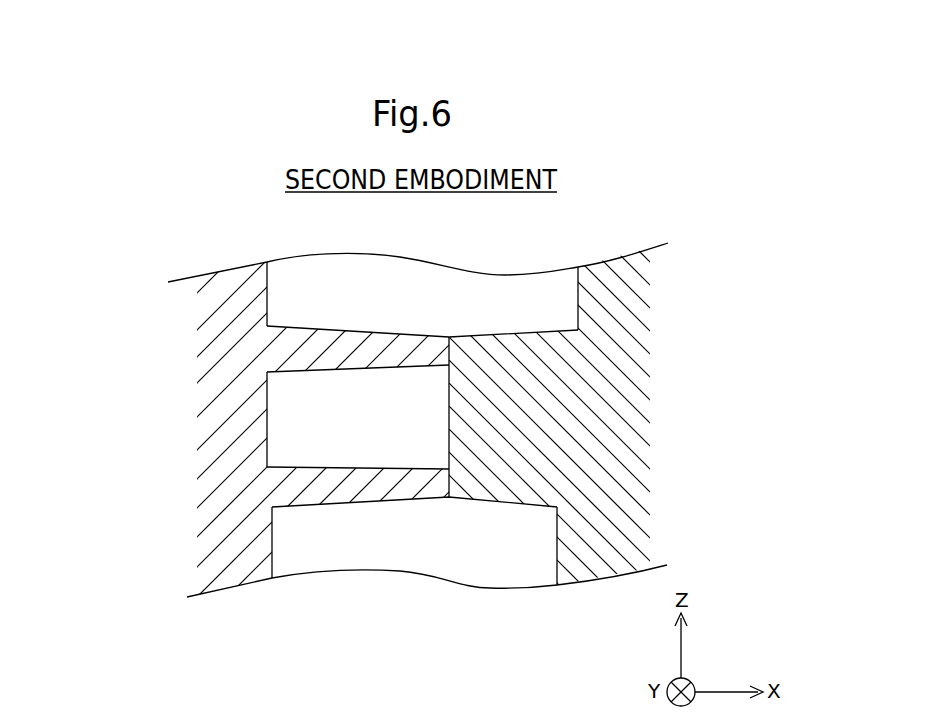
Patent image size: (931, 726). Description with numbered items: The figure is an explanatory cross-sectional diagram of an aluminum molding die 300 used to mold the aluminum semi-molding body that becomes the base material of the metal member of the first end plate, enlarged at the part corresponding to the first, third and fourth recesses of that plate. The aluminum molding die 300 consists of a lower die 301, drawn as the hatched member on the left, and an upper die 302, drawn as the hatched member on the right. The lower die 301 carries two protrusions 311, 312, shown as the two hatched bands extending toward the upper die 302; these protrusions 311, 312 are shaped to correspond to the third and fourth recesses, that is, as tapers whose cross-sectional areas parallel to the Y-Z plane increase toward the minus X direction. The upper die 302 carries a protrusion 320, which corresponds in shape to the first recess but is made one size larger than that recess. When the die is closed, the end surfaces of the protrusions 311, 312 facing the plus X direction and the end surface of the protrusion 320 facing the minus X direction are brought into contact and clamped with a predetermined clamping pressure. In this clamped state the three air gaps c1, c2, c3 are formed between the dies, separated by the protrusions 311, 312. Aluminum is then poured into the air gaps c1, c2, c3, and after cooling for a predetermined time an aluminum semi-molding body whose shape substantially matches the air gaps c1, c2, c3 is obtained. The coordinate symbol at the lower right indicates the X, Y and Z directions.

The aluminum molding die 300 is at (146, 233).
The lower die 301 is at (184, 318).
The upper die 302 is at (662, 319).
The protrusion 311 is at (356, 354).
The protrusion 312 is at (379, 488).
The protrusion 320 is at (490, 490).
The air gap c1 is at (289, 279).
The air gap c2 is at (283, 427).
The air gap c3 is at (298, 562).